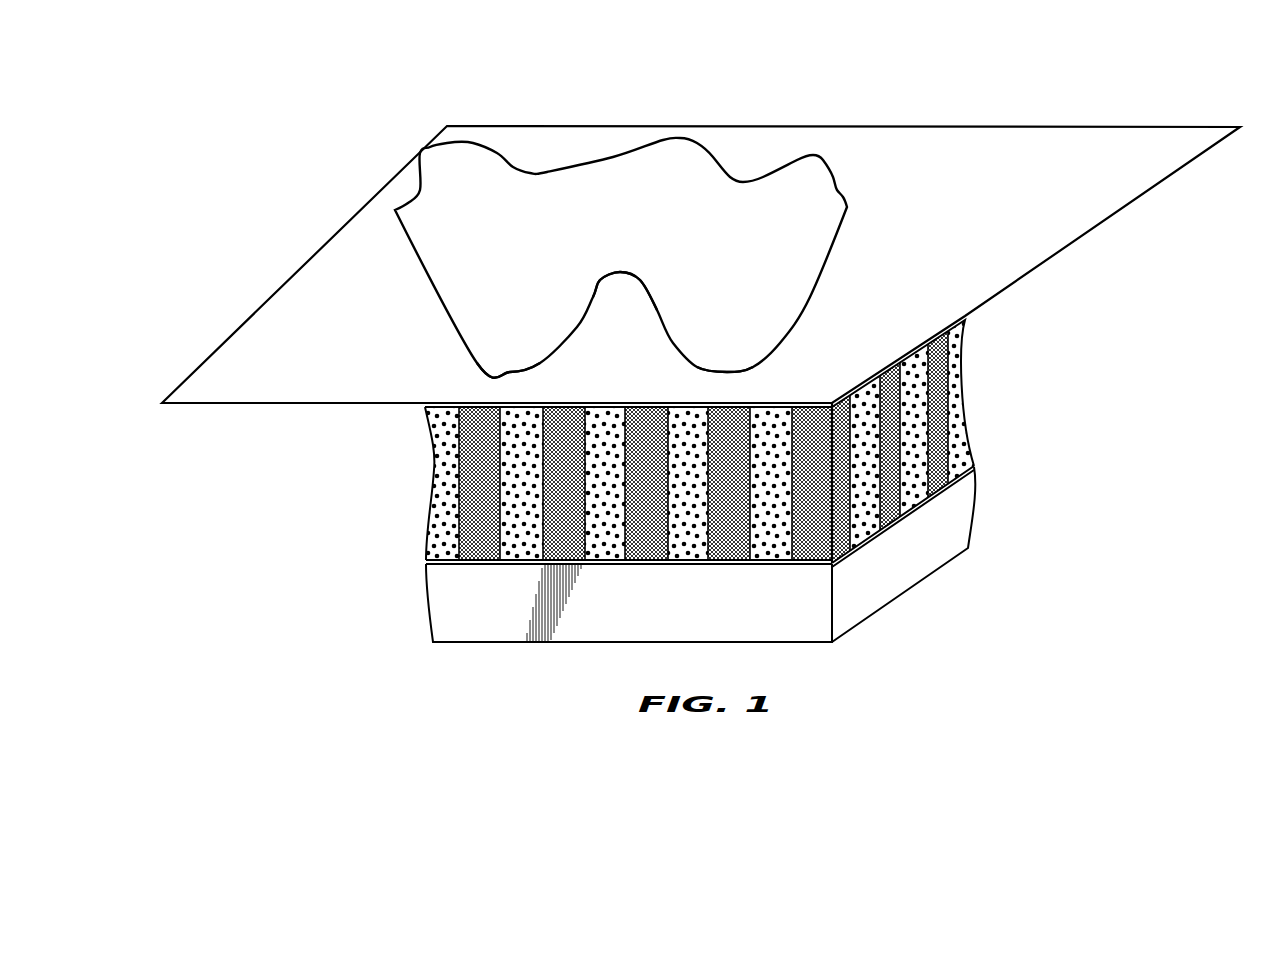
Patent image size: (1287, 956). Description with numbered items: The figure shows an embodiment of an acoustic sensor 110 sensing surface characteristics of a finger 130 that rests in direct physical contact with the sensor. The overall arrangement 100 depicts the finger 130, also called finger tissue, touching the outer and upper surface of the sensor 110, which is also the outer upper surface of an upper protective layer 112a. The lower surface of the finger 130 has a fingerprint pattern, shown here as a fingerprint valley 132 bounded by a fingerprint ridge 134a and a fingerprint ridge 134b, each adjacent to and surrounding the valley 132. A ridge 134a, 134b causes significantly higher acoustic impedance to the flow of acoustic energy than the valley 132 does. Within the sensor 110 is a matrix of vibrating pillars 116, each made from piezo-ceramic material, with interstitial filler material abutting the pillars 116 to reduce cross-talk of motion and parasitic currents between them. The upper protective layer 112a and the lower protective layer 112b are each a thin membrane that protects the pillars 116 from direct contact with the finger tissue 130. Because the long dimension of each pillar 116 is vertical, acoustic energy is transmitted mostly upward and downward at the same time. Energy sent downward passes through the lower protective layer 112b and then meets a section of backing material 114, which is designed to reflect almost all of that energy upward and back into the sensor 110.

The system 100 is at (1207, 53).
The acoustic sensor 110 is at (1088, 170).
The finger 130 is at (635, 197).
The fingerprint valley 132 is at (622, 287).
The fingerprint ridge 134a is at (507, 352).
The fingerprint ridge 134b is at (730, 350).
The upper protective layer 112a is at (424, 409).
The lower protective layer 112b is at (424, 562).
The backing material 114 is at (907, 568).
The vibrating pillars 116 is at (957, 477).